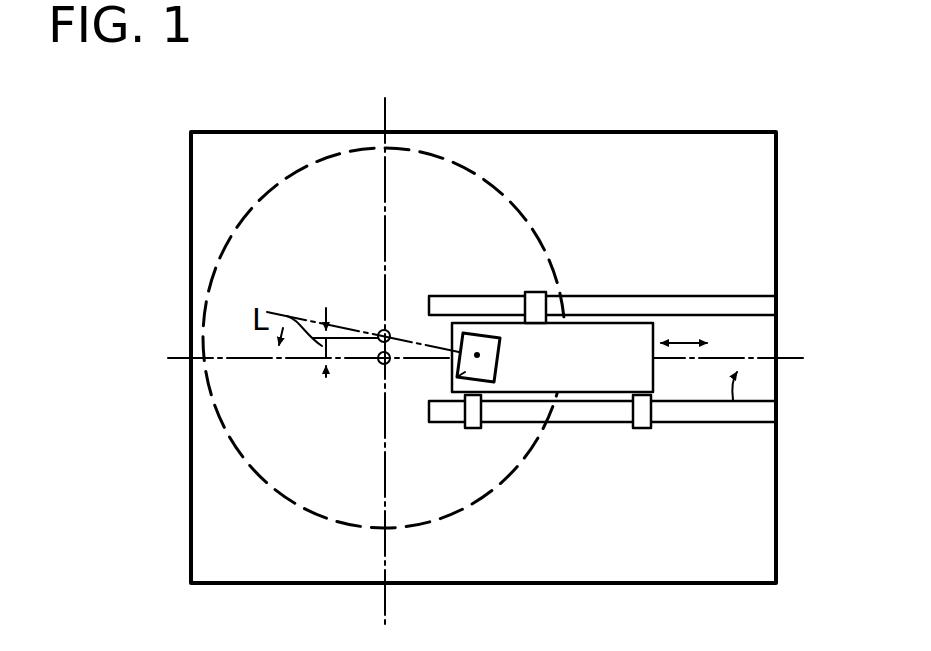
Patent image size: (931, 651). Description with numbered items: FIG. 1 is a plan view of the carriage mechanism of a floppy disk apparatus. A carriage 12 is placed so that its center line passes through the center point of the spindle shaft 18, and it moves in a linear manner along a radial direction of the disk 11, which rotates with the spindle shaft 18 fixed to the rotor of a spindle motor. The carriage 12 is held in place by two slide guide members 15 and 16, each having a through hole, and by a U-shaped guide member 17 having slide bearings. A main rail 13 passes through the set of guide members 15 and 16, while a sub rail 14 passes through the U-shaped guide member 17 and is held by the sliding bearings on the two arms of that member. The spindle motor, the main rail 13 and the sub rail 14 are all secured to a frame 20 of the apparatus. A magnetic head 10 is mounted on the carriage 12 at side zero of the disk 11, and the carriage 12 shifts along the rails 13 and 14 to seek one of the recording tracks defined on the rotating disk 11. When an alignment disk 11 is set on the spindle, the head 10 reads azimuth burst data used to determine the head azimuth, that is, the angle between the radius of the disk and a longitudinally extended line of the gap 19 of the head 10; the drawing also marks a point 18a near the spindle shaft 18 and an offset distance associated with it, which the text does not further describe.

The magnetic head 10 is at (470, 330).
The disk 11 is at (313, 505).
The carriage 12 is at (601, 378).
The main rail 13 is at (713, 413).
The sub rail 14 is at (657, 297).
The slide guide member 15 is at (470, 428).
The slide guide member 16 is at (645, 430).
The U-shaped guide member 17 is at (533, 292).
The spindle shaft 18 is at (383, 364).
The offset center 18a is at (381, 334).
The gap 19 is at (458, 378).
The frame 20 is at (756, 224).